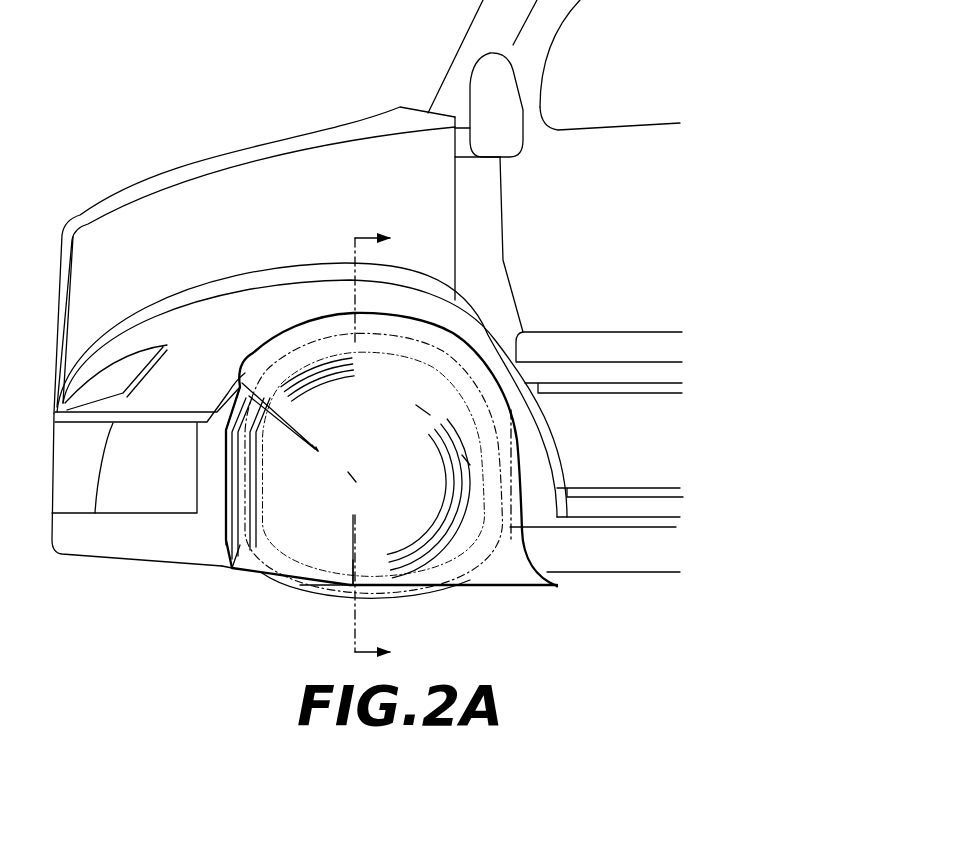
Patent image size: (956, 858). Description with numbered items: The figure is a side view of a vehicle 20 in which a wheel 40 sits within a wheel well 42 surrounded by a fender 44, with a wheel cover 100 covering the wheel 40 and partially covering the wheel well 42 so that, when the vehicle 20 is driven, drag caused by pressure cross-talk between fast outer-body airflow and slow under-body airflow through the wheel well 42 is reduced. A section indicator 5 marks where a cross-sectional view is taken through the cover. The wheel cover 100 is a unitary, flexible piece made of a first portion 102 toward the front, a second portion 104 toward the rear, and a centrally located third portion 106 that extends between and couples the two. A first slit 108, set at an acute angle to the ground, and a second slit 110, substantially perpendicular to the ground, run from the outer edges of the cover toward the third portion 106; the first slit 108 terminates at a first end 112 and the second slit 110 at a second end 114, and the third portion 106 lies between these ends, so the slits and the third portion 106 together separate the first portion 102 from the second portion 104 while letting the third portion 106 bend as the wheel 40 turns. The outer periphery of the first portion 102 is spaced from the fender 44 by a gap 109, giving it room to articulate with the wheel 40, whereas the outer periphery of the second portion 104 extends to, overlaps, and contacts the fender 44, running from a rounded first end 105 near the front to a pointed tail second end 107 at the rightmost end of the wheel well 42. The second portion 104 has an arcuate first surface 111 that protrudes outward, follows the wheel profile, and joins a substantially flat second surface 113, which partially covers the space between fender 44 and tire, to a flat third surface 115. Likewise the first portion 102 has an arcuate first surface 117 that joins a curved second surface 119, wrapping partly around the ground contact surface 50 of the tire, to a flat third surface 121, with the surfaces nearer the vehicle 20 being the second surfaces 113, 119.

The vehicle 20 is at (391, 78).
The fender 44 is at (303, 298).
The wheel 40 is at (320, 590).
The ground contact surface 50 is at (337, 607).
The section line 5 is at (383, 445).
The wheel cover 100 is at (222, 372).
The first portion 102 is at (283, 527).
The second portion 104 is at (435, 480).
The first end 105 is at (272, 372).
The third portion 106 is at (352, 477).
The second end 107 is at (557, 587).
The first slit 108 is at (273, 421).
The gap 109 is at (218, 513).
The second slit 110 is at (358, 552).
The first surface 111 is at (466, 460).
The first end 112 is at (325, 442).
The second surface 113 is at (520, 481).
The second end 114 is at (353, 517).
The third surface 115 is at (424, 408).
The first surface 117 is at (247, 490).
The second surface 119 is at (220, 530).
The third surface 121 is at (300, 470).
The wheel well 42 is at (225, 553).